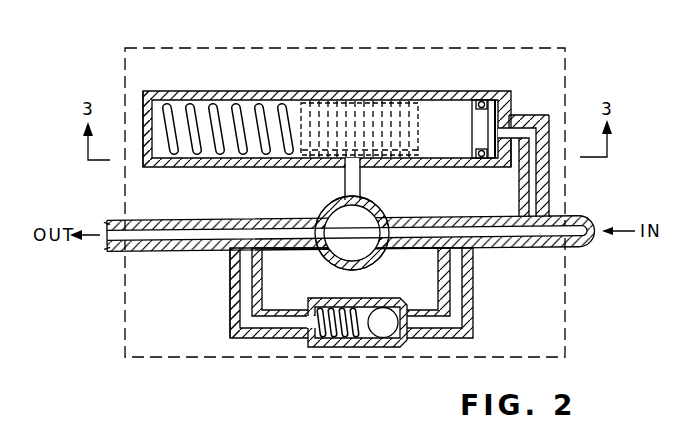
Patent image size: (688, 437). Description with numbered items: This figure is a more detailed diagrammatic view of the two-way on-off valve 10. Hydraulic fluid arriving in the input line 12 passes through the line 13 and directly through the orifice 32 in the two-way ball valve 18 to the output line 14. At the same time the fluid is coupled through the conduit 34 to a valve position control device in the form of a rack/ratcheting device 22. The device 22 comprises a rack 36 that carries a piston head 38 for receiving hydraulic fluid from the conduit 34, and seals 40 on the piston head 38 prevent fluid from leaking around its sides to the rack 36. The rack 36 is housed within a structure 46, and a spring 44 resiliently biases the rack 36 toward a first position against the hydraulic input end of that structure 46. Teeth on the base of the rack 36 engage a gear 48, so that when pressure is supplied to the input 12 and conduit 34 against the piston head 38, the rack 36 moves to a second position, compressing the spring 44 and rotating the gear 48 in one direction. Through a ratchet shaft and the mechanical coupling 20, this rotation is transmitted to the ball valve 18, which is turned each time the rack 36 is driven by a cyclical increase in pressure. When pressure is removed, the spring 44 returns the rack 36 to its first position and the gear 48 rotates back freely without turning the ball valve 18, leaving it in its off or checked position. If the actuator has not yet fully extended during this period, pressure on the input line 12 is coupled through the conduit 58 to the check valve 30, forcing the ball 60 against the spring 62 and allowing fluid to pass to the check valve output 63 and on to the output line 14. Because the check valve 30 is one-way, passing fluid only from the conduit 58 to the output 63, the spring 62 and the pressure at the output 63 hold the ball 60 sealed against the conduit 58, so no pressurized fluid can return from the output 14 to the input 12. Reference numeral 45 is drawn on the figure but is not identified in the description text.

The two-way on-off valve 10 is at (471, 48).
The input line 12 is at (578, 251).
The line 13 is at (431, 226).
The output line 14 is at (107, 219).
The two-way ball valve 18 is at (365, 216).
The mechanical coupling 20 is at (345, 183).
The rack/ratcheting device 22 is at (388, 92).
The check valve 30 is at (372, 298).
The orifice 32 is at (350, 238).
The conduit 34 is at (549, 148).
The rack 36 is at (440, 110).
The piston head 38 is at (510, 120).
The seals 40 is at (311, 108).
The spring 44 is at (252, 100).
The end cap 45 is at (148, 128).
The structure 46 is at (181, 97).
The gear 48 is at (396, 152).
The conduit 58 is at (476, 302).
The ball 60 is at (385, 330).
The spring 62 is at (345, 336).
The check valve output 63 is at (228, 282).